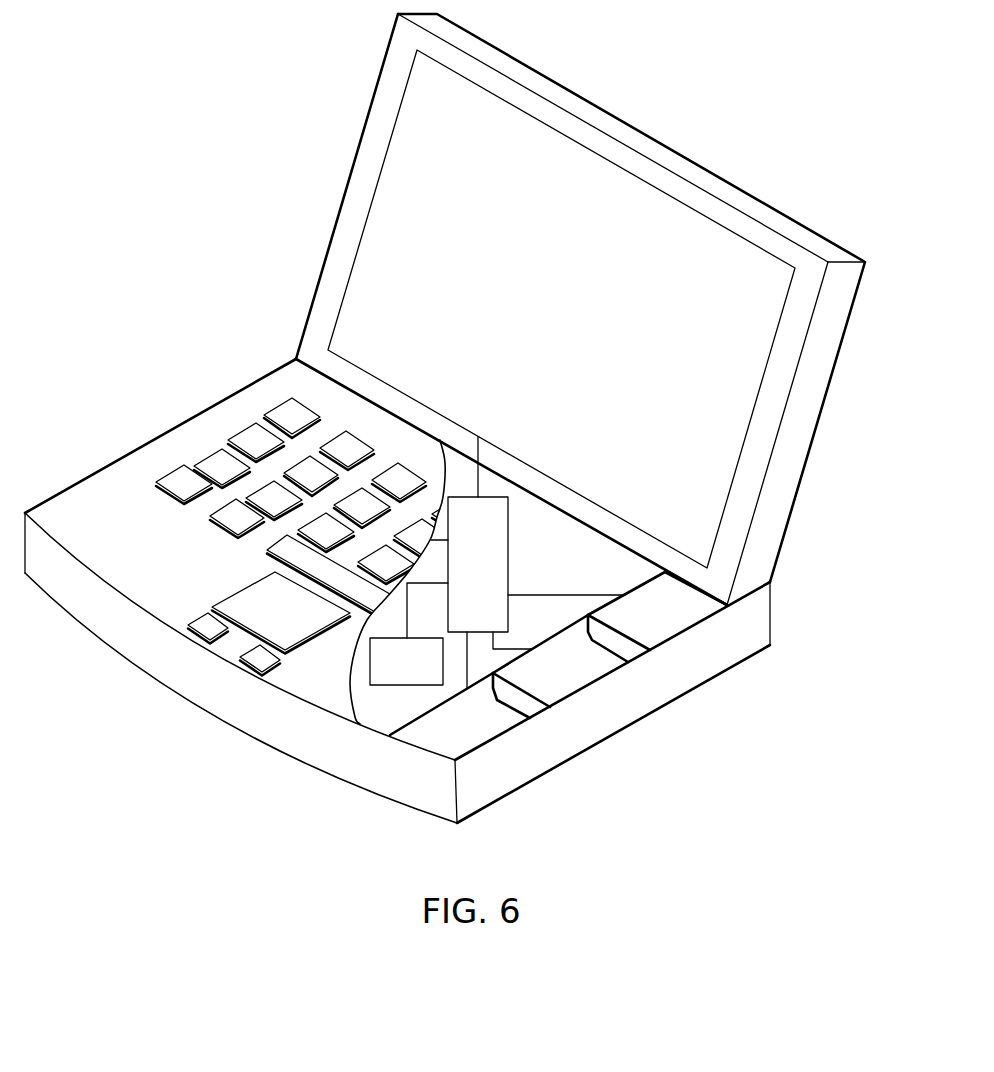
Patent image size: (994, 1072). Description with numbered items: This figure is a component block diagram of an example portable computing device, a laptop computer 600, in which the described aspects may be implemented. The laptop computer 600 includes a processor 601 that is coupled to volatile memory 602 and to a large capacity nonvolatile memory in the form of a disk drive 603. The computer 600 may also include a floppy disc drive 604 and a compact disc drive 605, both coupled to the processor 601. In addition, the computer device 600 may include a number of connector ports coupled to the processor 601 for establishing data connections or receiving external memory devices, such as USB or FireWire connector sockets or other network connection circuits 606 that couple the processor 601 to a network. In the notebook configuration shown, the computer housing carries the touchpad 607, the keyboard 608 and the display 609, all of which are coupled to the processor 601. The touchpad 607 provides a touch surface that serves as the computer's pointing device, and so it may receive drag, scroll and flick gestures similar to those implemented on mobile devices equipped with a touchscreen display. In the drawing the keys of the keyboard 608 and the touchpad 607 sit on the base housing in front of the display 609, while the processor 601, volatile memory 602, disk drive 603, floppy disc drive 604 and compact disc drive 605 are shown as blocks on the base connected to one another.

The laptop computer 600 is at (741, 155).
The processor 601 is at (457, 574).
The volatile memory 602 is at (387, 674).
The disk drive 603 is at (443, 736).
The floppy disc drive 604 is at (542, 674).
The compact disc (CD) drive 605 is at (635, 620).
The network connection circuits 606 is at (797, 498).
The touchpad 607 is at (237, 648).
The keyboard 608 is at (255, 423).
The display 609 is at (715, 535).